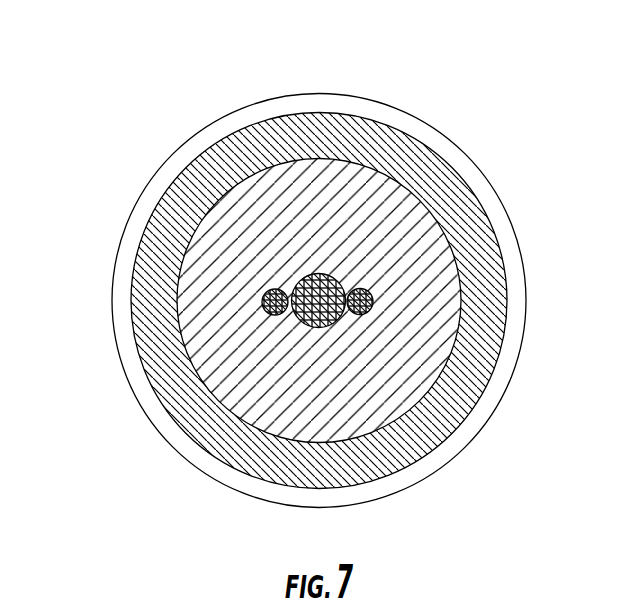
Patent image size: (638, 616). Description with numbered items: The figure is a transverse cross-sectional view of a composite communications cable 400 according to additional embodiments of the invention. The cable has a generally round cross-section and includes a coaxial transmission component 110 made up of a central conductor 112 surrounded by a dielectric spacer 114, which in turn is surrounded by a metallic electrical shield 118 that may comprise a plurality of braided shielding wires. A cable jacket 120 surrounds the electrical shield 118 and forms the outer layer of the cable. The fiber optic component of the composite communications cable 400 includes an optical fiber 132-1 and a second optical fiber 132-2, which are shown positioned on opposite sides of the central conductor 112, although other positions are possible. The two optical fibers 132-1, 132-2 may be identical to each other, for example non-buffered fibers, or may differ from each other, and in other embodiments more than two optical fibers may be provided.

The composite communications cable 400 is at (180, 73).
The coaxial transmission component 110 is at (174, 174).
The cable jacket 120 is at (502, 223).
The electrical shield 118 is at (483, 305).
The dielectric spacer 114 is at (370, 193).
The central conductor 112 is at (308, 316).
The optical fiber 132-1 is at (264, 297).
The second optical fiber 132-2 is at (362, 314).